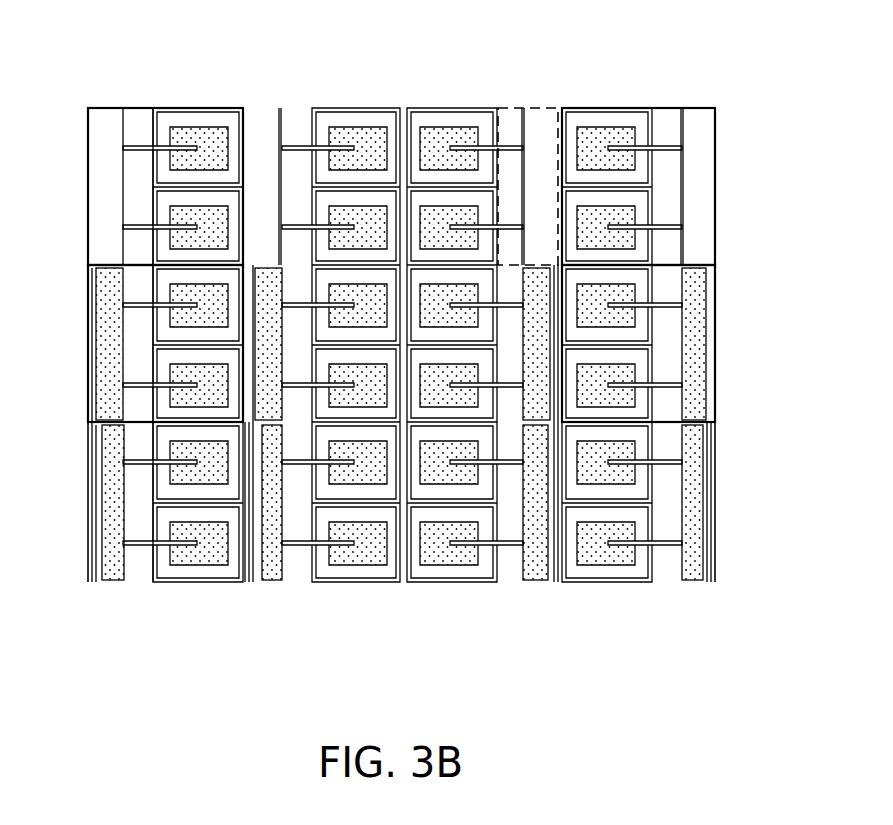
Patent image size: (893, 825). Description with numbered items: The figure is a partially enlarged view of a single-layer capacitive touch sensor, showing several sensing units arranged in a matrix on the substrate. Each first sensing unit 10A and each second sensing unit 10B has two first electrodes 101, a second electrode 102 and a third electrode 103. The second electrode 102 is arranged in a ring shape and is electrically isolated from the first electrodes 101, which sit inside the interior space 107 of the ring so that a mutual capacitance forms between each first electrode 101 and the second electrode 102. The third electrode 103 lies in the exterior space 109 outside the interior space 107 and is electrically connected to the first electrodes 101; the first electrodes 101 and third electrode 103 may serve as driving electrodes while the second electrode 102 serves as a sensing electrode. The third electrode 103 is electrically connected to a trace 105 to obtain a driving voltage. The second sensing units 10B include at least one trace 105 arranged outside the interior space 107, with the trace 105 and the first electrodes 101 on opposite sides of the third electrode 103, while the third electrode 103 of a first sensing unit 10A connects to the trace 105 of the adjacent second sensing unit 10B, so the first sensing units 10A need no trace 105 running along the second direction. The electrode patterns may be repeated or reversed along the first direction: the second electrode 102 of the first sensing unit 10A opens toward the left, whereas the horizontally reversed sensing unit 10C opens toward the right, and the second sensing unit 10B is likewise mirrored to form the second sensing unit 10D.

The first sensing unit 10A is at (134, 108).
The second sensing unit 10B is at (88, 392).
The sensing unit 10C is at (715, 193).
The second sensing unit 10D is at (716, 372).
The first electrode 101 is at (218, 218).
The second electrode 102 is at (147, 108).
The third electrode 103 is at (120, 136).
The trace 105 is at (91, 306).
The interior space 107 is at (434, 196).
The exterior space 109 is at (535, 108).